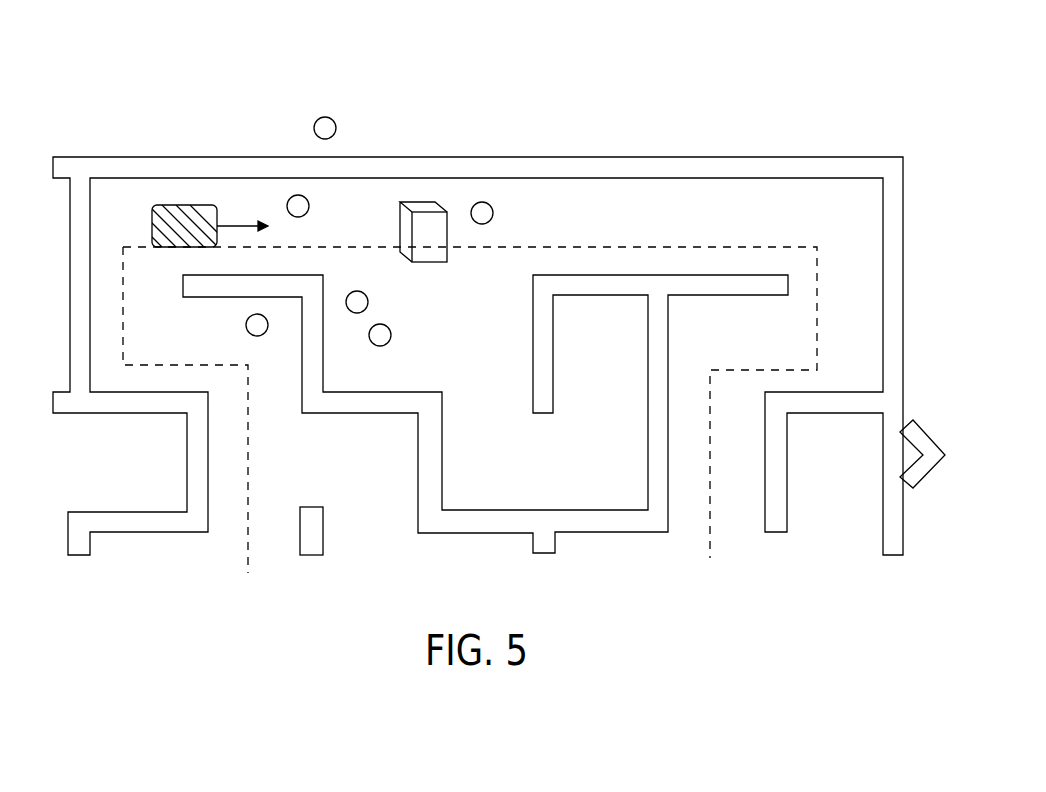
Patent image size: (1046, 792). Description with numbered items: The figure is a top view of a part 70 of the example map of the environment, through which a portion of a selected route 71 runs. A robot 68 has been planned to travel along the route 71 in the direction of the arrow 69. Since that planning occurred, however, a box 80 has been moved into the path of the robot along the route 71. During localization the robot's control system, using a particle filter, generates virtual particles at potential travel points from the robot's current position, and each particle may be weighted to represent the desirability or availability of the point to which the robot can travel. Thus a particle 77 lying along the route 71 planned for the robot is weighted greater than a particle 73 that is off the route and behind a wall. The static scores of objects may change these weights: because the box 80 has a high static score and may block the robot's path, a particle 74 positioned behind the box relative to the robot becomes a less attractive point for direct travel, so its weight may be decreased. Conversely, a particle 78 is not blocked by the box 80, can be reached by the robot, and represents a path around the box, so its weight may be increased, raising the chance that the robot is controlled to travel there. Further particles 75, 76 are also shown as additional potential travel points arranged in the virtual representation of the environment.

The robot 68 is at (172, 213).
The arrow 69 is at (232, 222).
The part of map 70 is at (729, 83).
The selected route 71 is at (710, 505).
The particle 73 is at (318, 117).
The particle 74 is at (493, 217).
The particle 75 is at (391, 339).
The particle 76 is at (259, 336).
The particle 77 is at (308, 211).
The particle 78 is at (368, 305).
The box 80 is at (447, 262).